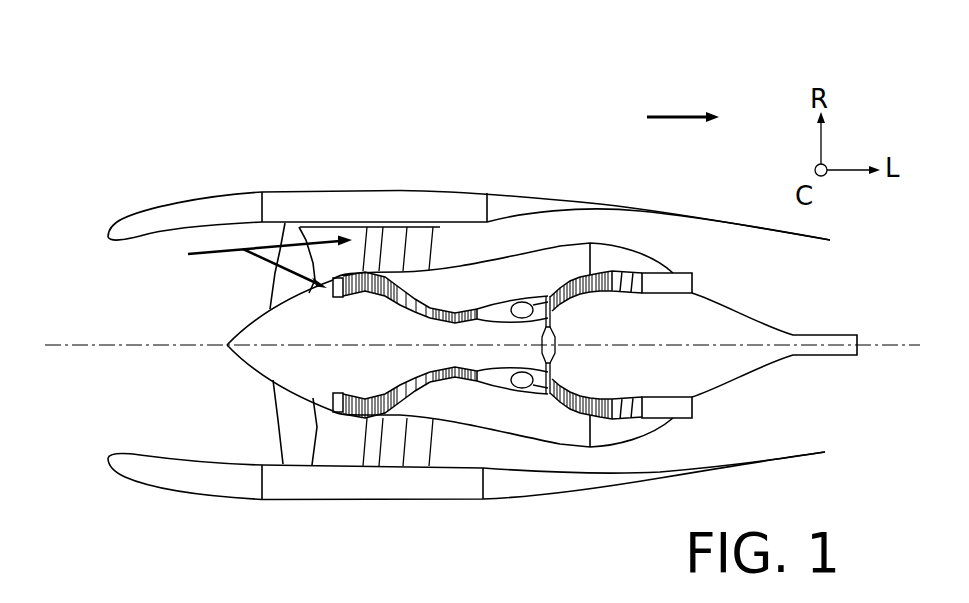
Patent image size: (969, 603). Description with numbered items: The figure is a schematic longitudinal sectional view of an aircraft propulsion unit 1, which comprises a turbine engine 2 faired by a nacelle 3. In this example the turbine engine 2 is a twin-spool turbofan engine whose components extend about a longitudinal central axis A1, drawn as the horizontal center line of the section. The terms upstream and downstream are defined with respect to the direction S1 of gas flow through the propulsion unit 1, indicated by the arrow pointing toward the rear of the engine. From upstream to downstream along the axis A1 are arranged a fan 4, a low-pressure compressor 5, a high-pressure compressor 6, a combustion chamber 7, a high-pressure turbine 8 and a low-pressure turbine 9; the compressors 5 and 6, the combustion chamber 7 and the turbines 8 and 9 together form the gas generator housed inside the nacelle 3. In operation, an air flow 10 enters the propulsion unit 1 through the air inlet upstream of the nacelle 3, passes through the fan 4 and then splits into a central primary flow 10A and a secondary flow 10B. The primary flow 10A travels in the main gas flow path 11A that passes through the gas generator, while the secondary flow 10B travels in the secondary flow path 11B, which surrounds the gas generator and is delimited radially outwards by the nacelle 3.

The aircraft propulsion unit 1 is at (196, 139).
The turbine engine 2 is at (720, 262).
The nacelle 3 is at (381, 203).
The fan 4 is at (287, 417).
The low-pressure compressor 5 is at (352, 264).
The high-pressure compressor 6 is at (463, 300).
The combustion chamber 7 is at (523, 293).
The high-pressure turbine 8 is at (576, 268).
The low-pressure turbine 9 is at (615, 265).
The air flow 10 is at (197, 253).
The primary flow 10A is at (280, 268).
The secondary flow 10B is at (289, 226).
The main gas flow path 11A is at (417, 383).
The secondary flow path 11B is at (548, 462).
The longitudinal central axis A1 is at (53, 343).
The direction of gas flow S1 is at (681, 114).